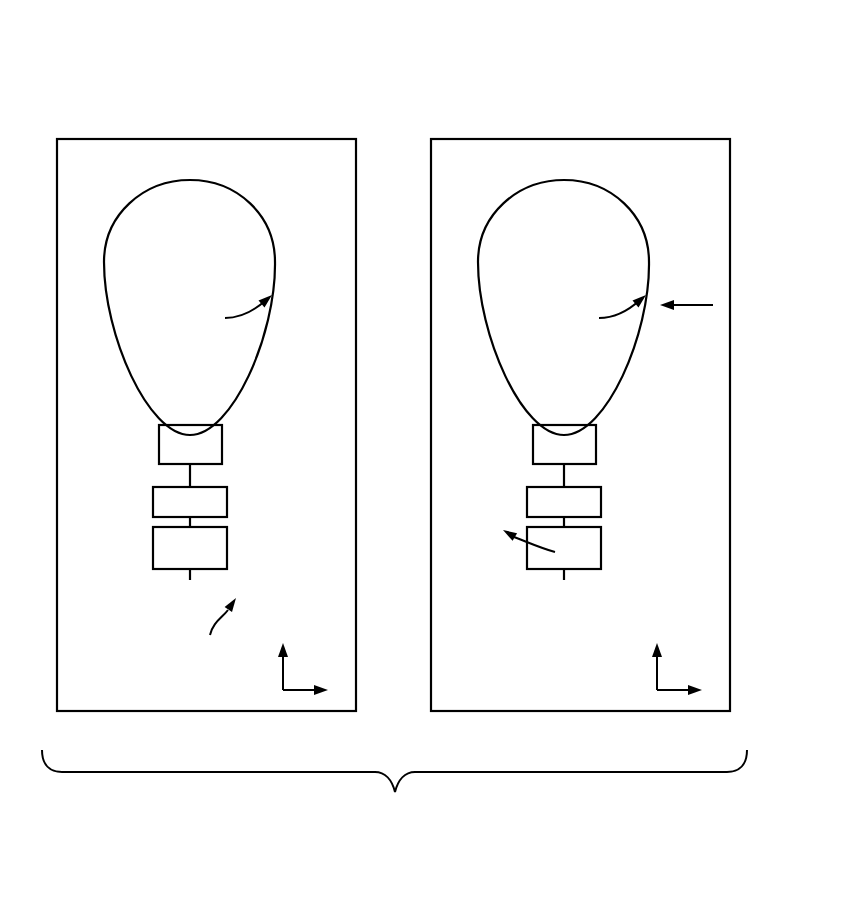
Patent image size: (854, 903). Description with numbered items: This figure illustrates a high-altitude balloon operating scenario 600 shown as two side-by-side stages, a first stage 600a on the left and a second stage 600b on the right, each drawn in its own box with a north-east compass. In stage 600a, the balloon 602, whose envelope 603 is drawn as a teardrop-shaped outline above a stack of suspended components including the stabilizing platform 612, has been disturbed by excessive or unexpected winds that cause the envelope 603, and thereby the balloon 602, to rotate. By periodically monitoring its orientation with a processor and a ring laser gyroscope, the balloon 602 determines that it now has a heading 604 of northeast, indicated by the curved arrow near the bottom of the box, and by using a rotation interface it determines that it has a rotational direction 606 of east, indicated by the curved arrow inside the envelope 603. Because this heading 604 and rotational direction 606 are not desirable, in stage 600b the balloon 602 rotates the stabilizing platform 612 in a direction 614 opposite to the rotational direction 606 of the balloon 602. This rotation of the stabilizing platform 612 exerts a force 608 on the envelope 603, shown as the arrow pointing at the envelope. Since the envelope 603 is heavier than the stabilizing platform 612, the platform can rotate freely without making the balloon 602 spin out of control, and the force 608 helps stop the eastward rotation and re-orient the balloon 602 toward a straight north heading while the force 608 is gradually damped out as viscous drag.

The scenario 600 is at (748, 60).
The first stage of scenario 600a is at (194, 139).
The second stage of scenario 600b is at (568, 139).
The balloon 602 is at (197, 192).
The balloon envelope 603 is at (248, 203).
The rotational direction 606 is at (237, 313).
The force 608 is at (695, 305).
The stabilizing platform 612 is at (228, 547).
The direction of platform rotation 614 is at (541, 552).
The heading 604 is at (214, 632).